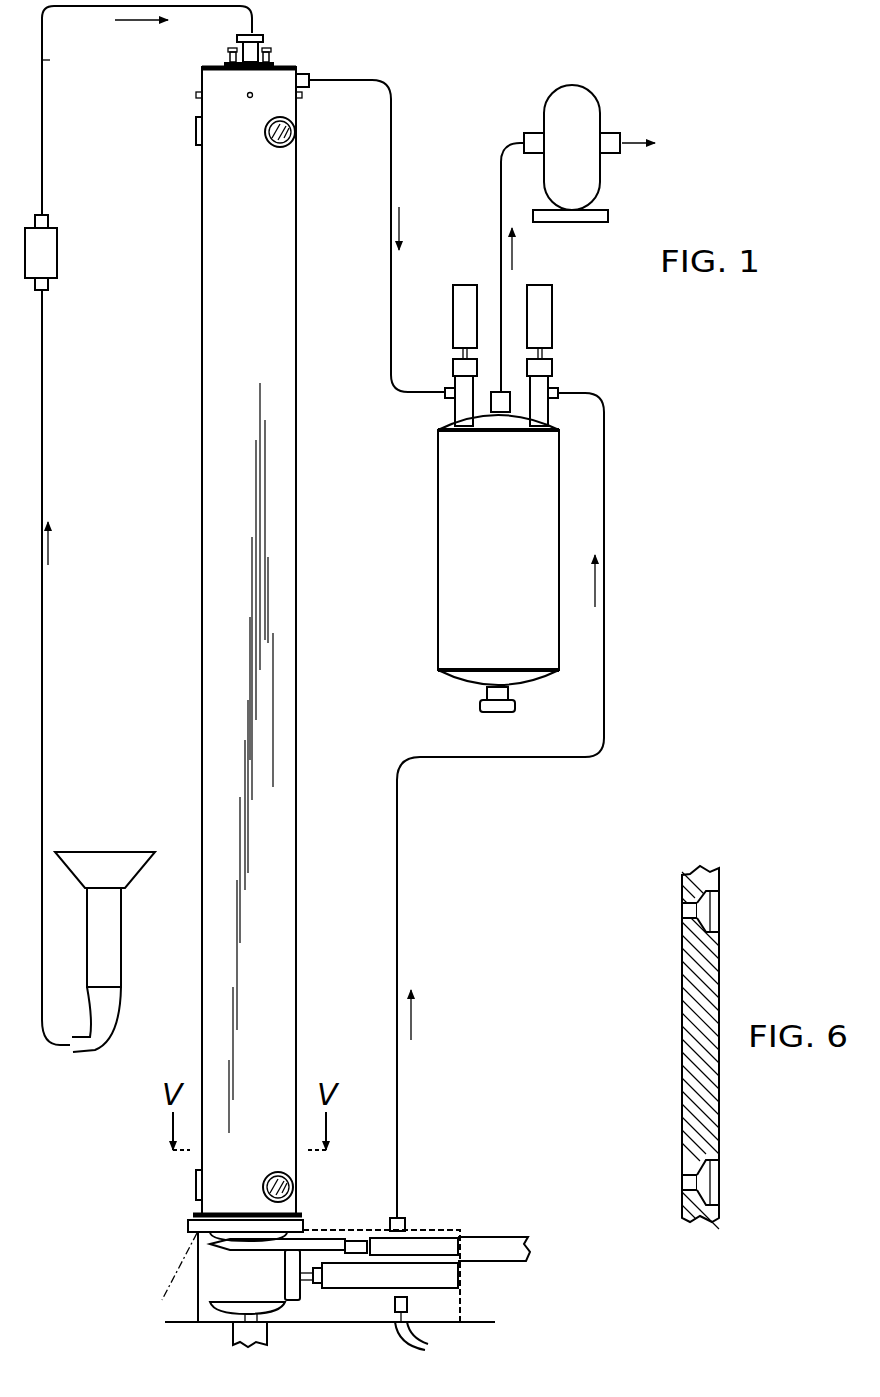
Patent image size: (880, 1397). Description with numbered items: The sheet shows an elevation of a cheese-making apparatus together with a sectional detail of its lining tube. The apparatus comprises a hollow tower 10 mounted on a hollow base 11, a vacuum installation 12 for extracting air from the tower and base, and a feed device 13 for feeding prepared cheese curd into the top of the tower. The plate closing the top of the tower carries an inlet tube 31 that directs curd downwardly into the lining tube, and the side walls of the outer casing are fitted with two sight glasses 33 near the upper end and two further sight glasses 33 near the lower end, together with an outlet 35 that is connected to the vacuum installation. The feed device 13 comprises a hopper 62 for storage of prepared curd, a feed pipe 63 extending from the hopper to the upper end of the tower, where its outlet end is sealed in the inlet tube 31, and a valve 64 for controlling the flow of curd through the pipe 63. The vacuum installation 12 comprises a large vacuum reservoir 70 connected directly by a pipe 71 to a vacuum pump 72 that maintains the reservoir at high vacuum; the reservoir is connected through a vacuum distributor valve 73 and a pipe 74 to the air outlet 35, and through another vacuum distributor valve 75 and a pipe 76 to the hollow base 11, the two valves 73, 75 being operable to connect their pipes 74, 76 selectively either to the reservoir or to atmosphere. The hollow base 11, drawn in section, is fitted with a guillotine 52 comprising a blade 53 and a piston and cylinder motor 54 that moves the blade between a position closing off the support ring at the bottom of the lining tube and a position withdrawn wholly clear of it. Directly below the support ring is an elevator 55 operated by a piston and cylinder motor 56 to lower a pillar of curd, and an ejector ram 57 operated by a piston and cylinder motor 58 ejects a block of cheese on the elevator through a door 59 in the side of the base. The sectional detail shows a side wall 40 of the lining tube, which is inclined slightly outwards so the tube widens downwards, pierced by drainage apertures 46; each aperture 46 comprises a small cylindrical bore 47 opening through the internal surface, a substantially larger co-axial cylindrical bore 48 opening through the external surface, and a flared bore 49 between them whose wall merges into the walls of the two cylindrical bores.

In FIG. 1, the hollow tower 10 is at (202, 332).
In FIG. 1, the hollow base 11 is at (450, 1229).
In FIG. 1, the vacuum installation 12 is at (574, 378).
In FIG. 1, the feed device 13 is at (58, 1058).
In FIG. 1, the inlet tube 31 is at (262, 38).
In FIG. 1, the sight glasses 33 is at (196, 132).
In FIG. 1, the outlet 35 is at (312, 76).
In FIG. 6, the side walls 40 is at (682, 960).
In FIG. 6, the drainage apertures 46 is at (720, 920).
In FIG. 6, the cylindrical bore 47 is at (683, 911).
In FIG. 6, the cylindrical bore 48 is at (720, 900).
In FIG. 6, the flared bore 49 is at (695, 878).
In FIG. 1, the guillotine 52 is at (423, 1245).
In FIG. 1, the blade 53 is at (245, 1247).
In FIG. 1, the piston and cylinder motor 54 is at (505, 1245).
In FIG. 1, the elevator 55 is at (245, 1300).
In FIG. 1, the piston and cylinder motor 56 is at (240, 1332).
In FIG. 1, the ejector ram 57 is at (293, 1290).
In FIG. 1, the piston and cylinder motor 58 is at (385, 1278).
In FIG. 1, the door 59 is at (180, 1262).
In FIG. 1, the hopper 62 is at (108, 851).
In FIG. 1, the feed pipe 63 is at (42, 612).
In FIG. 1, the valve 64 is at (57, 248).
In FIG. 1, the vacuum reservoir 70 is at (439, 565).
In FIG. 1, the pipe 71 is at (501, 170).
In FIG. 1, the vacuum pump 72 is at (600, 106).
In FIG. 1, the vacuum distributor valve 73 is at (453, 365).
In FIG. 1, the pipe 74 is at (392, 110).
In FIG. 1, the vacuum distributor valve 75 is at (552, 368).
In FIG. 1, the pipe 76 is at (604, 452).